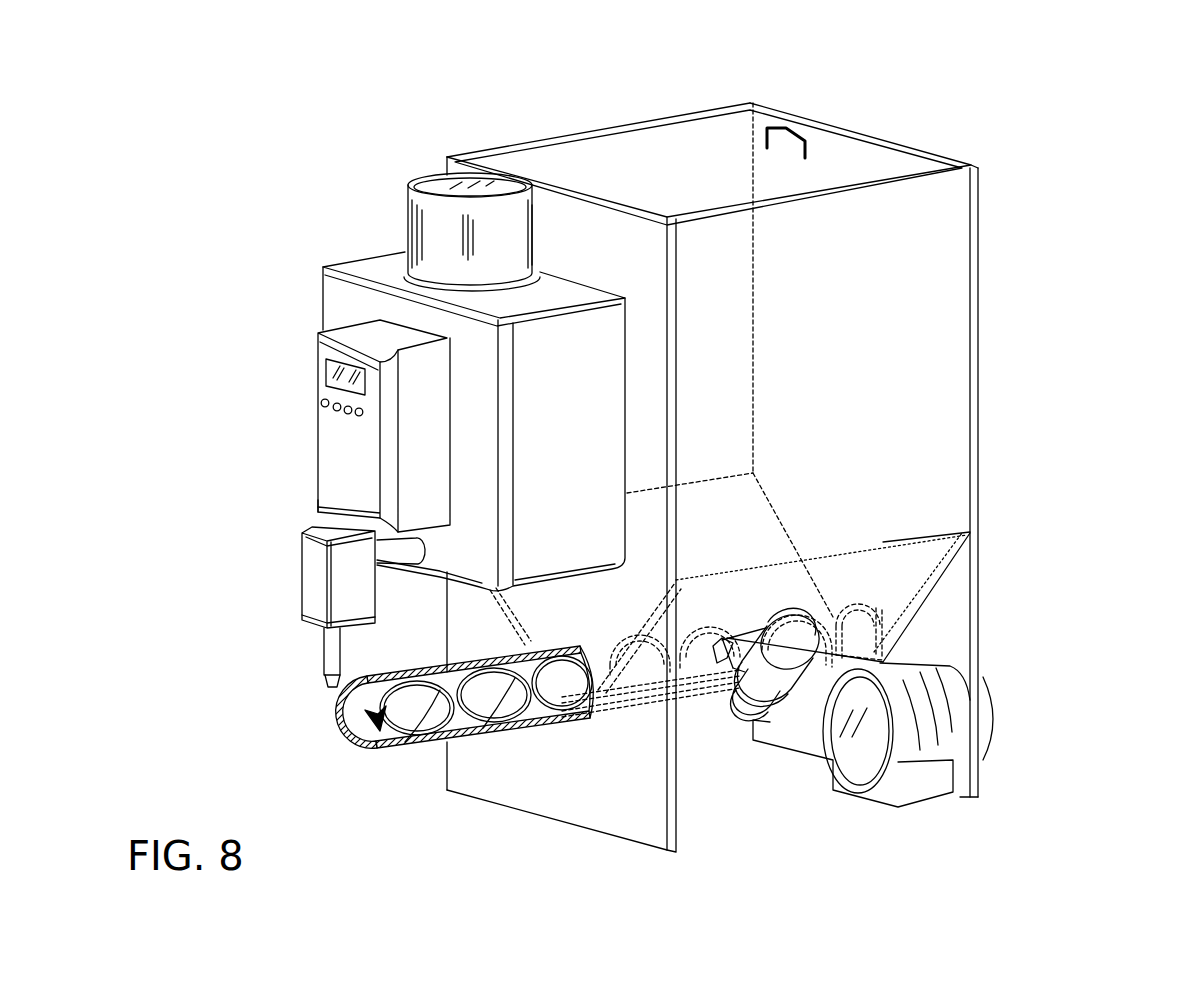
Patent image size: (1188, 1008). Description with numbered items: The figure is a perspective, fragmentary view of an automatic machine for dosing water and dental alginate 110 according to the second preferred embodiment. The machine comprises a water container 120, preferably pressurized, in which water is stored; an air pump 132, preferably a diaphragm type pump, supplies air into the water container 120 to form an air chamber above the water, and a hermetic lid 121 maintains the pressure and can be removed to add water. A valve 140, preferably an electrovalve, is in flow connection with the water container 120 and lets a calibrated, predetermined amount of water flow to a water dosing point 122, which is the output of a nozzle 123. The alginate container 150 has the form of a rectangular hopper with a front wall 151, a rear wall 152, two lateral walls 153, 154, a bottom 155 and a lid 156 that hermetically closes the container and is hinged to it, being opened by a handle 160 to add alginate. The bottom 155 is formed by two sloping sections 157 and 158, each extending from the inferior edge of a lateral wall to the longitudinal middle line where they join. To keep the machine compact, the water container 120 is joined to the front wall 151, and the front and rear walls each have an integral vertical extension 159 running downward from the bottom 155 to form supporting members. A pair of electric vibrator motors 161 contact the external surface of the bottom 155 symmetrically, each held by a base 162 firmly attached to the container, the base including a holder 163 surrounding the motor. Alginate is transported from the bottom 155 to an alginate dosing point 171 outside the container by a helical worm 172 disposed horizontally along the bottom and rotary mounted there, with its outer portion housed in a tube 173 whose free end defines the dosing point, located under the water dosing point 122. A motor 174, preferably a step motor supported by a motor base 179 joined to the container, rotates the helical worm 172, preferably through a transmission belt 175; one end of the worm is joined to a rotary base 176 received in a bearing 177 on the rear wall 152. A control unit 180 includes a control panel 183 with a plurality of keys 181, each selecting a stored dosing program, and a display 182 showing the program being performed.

The automatic machine for dosing water and dental alginate 110 is at (313, 143).
The water container 120 is at (355, 258).
The hermetic lid 121 is at (443, 185).
The water dosing point 122 is at (334, 688).
The nozzle 123 is at (325, 656).
The air pump 132 is at (350, 322).
The valve 140 is at (302, 583).
The alginate container 150 is at (748, 103).
The front wall 151 is at (613, 252).
The rear wall 152 is at (978, 245).
The lateral wall 153 is at (863, 370).
The lateral wall 154 is at (572, 137).
The bottom 155 is at (723, 530).
The lid 156 is at (693, 165).
The sloping section 157 is at (785, 522).
The sloping section 158 is at (883, 542).
The vertical extension 159 is at (583, 780).
The handle 160 is at (788, 131).
The electric vibrator motor 161 is at (778, 672).
The base 162 is at (733, 670).
The holder 163 is at (770, 700).
The alginate dosing point 171 is at (358, 752).
The helical worm 172 is at (418, 720).
The tube 173 is at (490, 722).
The motor 174 is at (858, 766).
The transmission belt 175 is at (998, 737).
The rotary base 176 is at (860, 640).
The bearing 177 is at (882, 623).
The motor base 179 is at (932, 787).
The control unit 180 is at (318, 448).
The keys 181 is at (350, 409).
The display 182 is at (326, 370).
The control panel 183 is at (362, 458).